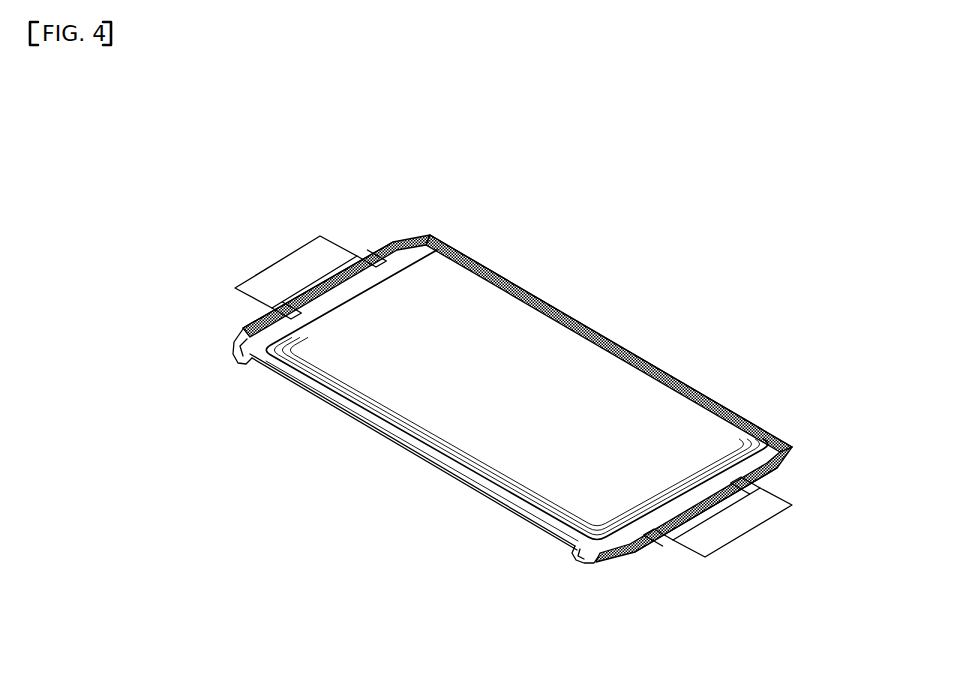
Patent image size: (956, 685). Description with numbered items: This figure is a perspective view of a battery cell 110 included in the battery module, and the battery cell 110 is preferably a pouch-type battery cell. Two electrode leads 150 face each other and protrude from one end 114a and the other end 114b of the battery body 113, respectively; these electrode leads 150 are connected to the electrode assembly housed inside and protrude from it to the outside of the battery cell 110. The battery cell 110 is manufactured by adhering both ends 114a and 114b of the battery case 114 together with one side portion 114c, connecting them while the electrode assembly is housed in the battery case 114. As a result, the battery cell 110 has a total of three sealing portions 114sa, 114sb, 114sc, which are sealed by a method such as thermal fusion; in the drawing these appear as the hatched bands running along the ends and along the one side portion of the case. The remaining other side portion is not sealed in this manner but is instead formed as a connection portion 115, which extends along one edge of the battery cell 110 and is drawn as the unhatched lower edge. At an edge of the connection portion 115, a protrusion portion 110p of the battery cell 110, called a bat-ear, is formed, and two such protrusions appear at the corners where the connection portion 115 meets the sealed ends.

The battery cell 110 is at (229, 92).
The protrusion portion 110p is at (241, 357).
The battery body 113 is at (522, 328).
The battery case 114 is at (781, 440).
The one end 114a is at (408, 237).
The other end 114b is at (619, 541).
The one side portion 114c is at (622, 348).
The sealing portion 114sa is at (385, 243).
The sealing portion 114sb is at (779, 470).
The sealing portion 114sc is at (707, 400).
The connection portion 115 is at (420, 448).
The electrode lead 150 is at (292, 268).